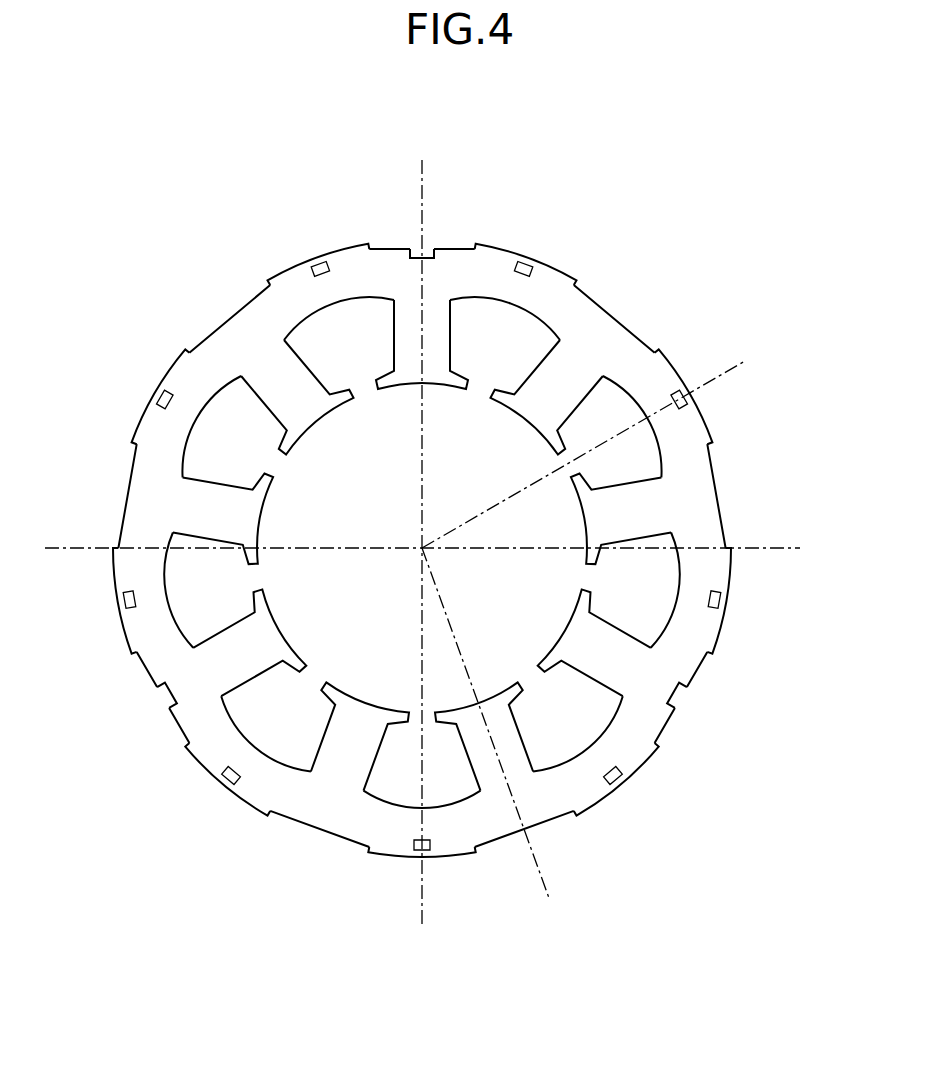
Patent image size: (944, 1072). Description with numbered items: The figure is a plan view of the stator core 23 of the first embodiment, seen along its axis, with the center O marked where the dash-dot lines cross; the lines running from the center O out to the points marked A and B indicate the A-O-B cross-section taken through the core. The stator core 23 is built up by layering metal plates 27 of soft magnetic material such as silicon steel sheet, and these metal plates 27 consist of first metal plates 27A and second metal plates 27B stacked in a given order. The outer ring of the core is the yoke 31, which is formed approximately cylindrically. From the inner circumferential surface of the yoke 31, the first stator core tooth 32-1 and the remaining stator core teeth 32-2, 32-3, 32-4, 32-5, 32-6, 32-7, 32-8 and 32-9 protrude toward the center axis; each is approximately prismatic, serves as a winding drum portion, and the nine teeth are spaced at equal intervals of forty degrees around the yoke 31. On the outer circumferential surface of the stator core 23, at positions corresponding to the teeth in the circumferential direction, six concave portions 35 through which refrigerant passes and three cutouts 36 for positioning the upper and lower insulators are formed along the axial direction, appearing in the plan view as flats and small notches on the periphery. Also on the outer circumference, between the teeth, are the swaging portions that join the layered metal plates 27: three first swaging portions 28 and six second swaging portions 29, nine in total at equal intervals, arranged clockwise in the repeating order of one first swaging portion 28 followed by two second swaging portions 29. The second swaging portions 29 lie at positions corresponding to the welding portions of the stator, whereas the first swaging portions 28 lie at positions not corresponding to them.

The stator core 23 is at (508, 123).
The metal plates 27 is at (722, 512).
The first metal plates 27A is at (428, 531).
The second metal plates 27B is at (428, 531).
The first swaging portions 28 is at (524, 257).
The second swaging portions 29 is at (325, 255).
The yoke 31 is at (550, 292).
The first stator core tooth 32-1 is at (415, 345).
The stator core tooth 32-2 is at (528, 378).
The stator core tooth 32-3 is at (612, 511).
The stator core tooth 32-4 is at (578, 632).
The stator core tooth 32-5 is at (490, 705).
The stator core tooth 32-6 is at (365, 720).
The stator core tooth 32-7 is at (262, 625).
The stator core tooth 32-8 is at (250, 518).
The stator core tooth 32-9 is at (290, 400).
The concave portions 35 is at (252, 300).
The cutouts 36 is at (427, 256).
The center O is at (419, 551).
The cross-section line A is at (728, 379).
The cross-section line B is at (550, 878).